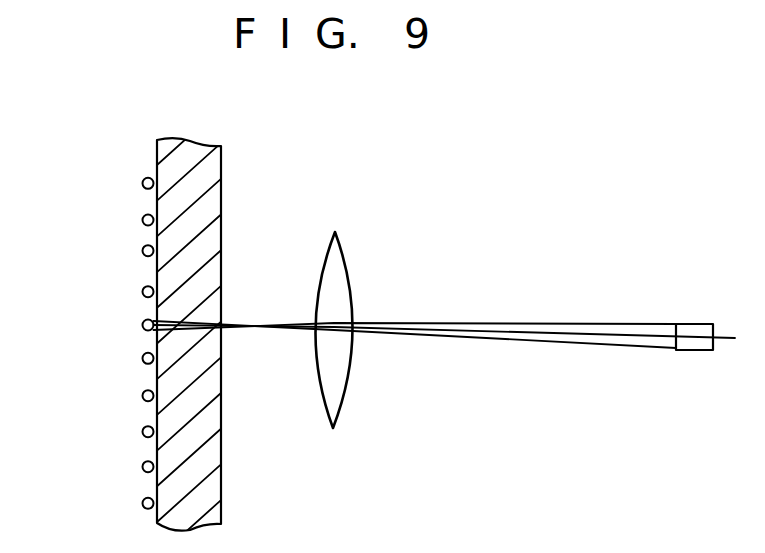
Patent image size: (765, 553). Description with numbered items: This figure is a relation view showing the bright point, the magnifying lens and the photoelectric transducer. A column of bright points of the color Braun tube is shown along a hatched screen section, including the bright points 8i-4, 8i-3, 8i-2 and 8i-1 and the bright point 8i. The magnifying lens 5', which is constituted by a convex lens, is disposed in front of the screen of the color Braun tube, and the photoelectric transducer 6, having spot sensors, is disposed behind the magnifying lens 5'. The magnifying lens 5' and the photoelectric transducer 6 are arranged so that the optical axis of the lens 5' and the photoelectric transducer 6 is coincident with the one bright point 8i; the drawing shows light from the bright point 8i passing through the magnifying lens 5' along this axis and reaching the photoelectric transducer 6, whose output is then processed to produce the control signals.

The light emitting element 8i-4 is at (142, 183).
The light emitting element 8i-3 is at (142, 220).
The light emitting element 8i-2 is at (142, 251).
The light emitting element 8i-1 is at (142, 292).
The bright point 8i is at (142, 325).
The magnifying lens 5' is at (353, 303).
The photoelectric transducer 6 is at (695, 323).